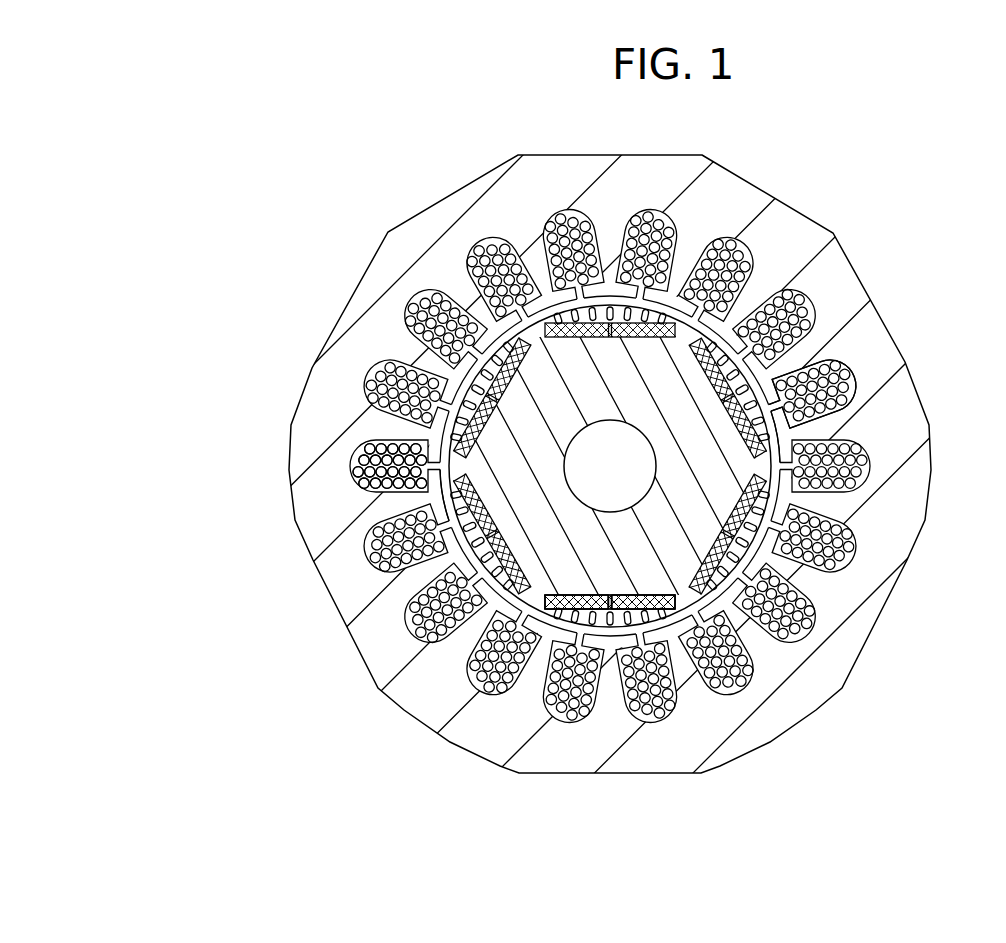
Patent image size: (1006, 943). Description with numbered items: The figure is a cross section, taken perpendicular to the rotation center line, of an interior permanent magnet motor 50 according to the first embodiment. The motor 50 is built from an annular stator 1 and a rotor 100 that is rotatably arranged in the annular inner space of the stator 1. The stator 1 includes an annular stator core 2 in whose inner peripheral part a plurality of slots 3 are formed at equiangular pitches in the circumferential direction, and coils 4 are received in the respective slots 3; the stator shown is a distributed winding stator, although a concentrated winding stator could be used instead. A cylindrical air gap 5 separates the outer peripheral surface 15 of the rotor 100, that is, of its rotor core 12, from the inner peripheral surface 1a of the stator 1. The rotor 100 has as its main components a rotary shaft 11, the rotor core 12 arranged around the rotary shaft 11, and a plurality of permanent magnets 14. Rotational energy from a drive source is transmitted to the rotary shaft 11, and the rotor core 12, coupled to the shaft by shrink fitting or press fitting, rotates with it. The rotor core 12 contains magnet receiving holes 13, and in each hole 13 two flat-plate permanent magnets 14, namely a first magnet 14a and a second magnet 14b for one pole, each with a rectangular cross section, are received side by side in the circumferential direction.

The stator 1 is at (653, 164).
The inner peripheral surface 1a is at (673, 303).
The stator core 2 is at (750, 210).
The slots 3 is at (510, 237).
The coils 4 is at (835, 375).
The air gap 5 is at (780, 424).
The rotary shaft 11 is at (735, 590).
The rotor core 12 is at (768, 556).
The magnet receiving holes 13 is at (430, 489).
The permanent magnets 14 is at (653, 818).
The permanent magnet 14a is at (614, 607).
The permanent magnet 14b is at (553, 605).
The outer peripheral surface 15 is at (723, 343).
The interior permanent magnet motor 50 is at (177, 227).
The rotor 100 is at (778, 497).